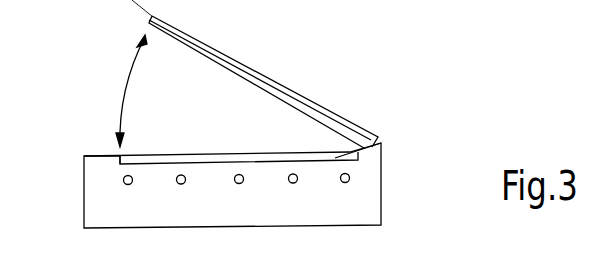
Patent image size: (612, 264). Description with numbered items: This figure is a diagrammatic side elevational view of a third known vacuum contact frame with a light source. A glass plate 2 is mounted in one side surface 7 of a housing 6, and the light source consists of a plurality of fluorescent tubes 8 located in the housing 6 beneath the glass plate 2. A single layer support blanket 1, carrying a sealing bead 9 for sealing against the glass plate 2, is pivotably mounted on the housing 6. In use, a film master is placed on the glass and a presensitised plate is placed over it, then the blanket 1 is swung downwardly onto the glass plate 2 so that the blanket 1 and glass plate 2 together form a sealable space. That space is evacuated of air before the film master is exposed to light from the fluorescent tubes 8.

The blanket 1 is at (200, 42).
The glass plate 2 is at (381, 146).
The housing 6 is at (381, 181).
The side surface 7 is at (100, 155).
The fluorescent tubes 8 is at (124, 180).
The sealing bead 9 is at (243, 71).